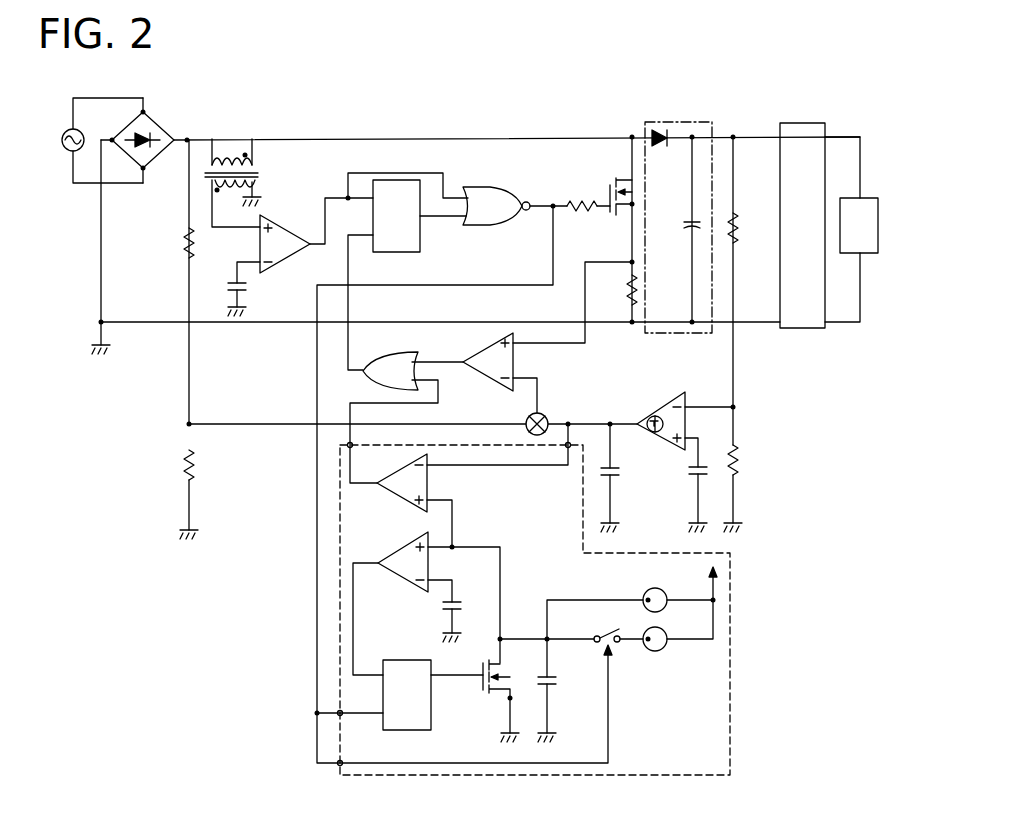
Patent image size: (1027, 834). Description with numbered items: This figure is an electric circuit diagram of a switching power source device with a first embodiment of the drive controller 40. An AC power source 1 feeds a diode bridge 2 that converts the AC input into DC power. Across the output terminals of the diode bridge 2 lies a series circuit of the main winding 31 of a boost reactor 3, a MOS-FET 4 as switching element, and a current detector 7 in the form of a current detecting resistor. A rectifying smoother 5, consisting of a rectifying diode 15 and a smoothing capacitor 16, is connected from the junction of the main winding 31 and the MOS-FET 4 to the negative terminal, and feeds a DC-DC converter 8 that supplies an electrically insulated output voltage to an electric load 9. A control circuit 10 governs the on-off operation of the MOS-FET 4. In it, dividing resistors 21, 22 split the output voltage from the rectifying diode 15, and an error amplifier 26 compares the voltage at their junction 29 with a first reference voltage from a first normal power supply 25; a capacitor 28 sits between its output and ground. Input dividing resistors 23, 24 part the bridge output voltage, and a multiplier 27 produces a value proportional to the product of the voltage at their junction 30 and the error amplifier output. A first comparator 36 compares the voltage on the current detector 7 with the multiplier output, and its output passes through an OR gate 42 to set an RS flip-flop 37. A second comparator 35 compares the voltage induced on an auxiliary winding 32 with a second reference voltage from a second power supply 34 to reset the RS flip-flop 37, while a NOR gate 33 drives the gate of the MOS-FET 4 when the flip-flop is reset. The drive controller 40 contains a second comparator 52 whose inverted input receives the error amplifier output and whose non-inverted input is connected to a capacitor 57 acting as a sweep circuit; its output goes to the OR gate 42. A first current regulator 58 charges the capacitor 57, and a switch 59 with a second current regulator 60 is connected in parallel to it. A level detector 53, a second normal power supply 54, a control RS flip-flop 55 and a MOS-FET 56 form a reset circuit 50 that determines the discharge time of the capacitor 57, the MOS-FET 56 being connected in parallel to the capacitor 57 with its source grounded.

The AC power source 1 is at (80, 136).
The diode bridge 2 is at (160, 124).
The boost reactor 3 is at (247, 169).
The MOS-FET 4 is at (606, 193).
The rectifying smoother 5 is at (675, 209).
The current detector 7 is at (628, 288).
The DC-DC converter 8 is at (820, 225).
The electric load 9 is at (859, 225).
The control circuit 10 is at (551, 431).
The rectifying diode 15 is at (660, 148).
The smoothing capacitor 16 is at (692, 232).
The dividing resistor 21 is at (735, 228).
The dividing resistor 22 is at (739, 471).
The input dividing resistor 23 is at (188, 248).
The input dividing resistor 24 is at (186, 463).
The first normal power supply 25 is at (696, 480).
The error amplifier 26 is at (671, 398).
The multiplier 27 is at (547, 416).
The capacitor 28 is at (618, 470).
The junction 29 is at (735, 409).
The junction 30 is at (187, 424).
The main winding 31 is at (228, 157).
The auxiliary winding 32 is at (238, 190).
The NOR gate 33 is at (536, 206).
The second power supply 34 is at (230, 283).
The second comparator 35 is at (280, 230).
The first comparator 36 is at (492, 378).
The RS flip-flop 37 is at (420, 245).
The drive controller 40 is at (732, 734).
The OR gate 42 is at (406, 417).
The reset circuit 50 is at (383, 723).
The second comparator 52 is at (404, 515).
The level detector 53 is at (408, 590).
The second normal power supply 54 is at (460, 603).
The control RS flip-flop 55 is at (431, 728).
The MOS-FET 56 is at (480, 680).
The capacitor 57 is at (553, 692).
The first current regulator 58 is at (644, 597).
The switch 59 is at (604, 637).
The second current regulator 60 is at (662, 652).